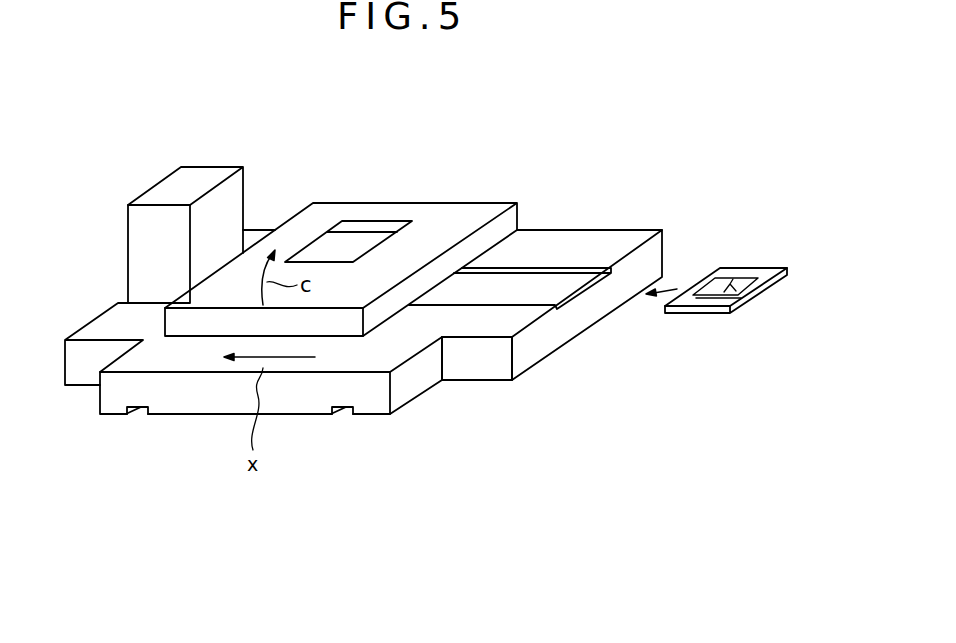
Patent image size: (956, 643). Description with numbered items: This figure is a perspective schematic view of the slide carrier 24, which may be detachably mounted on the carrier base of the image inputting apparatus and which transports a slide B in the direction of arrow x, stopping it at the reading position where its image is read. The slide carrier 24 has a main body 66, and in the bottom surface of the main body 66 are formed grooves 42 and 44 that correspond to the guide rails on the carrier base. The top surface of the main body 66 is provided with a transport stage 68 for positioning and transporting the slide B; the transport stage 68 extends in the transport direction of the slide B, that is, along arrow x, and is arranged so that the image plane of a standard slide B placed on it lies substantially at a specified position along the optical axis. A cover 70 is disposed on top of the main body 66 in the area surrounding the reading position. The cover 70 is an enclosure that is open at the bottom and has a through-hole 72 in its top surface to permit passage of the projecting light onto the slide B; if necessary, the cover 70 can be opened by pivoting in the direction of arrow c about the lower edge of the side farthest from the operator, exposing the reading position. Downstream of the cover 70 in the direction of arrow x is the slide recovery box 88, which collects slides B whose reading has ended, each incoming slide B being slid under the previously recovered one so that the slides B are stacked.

The slide carrier 24 is at (645, 205).
The groove 42 is at (139, 419).
The groove 44 is at (345, 419).
The main body 66 is at (477, 367).
The transport stage 68 is at (541, 292).
The cover 70 is at (445, 210).
The through-hole 72 is at (342, 245).
The slide recovery box 88 is at (153, 233).
The slide B is at (693, 298).